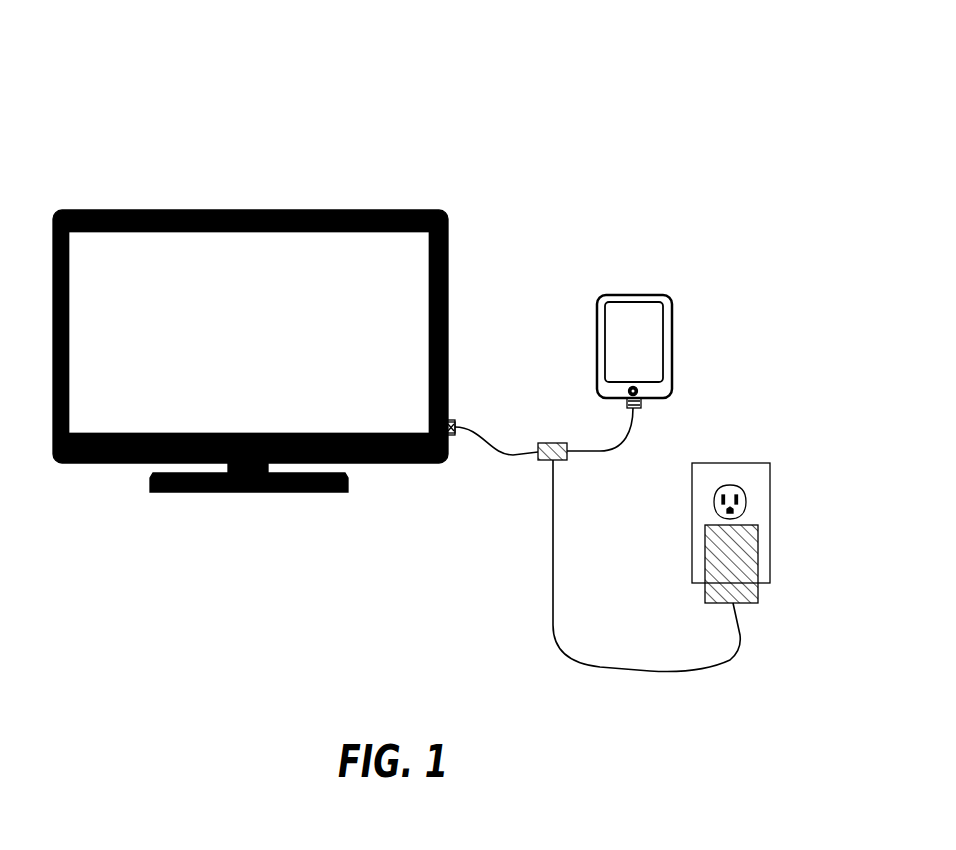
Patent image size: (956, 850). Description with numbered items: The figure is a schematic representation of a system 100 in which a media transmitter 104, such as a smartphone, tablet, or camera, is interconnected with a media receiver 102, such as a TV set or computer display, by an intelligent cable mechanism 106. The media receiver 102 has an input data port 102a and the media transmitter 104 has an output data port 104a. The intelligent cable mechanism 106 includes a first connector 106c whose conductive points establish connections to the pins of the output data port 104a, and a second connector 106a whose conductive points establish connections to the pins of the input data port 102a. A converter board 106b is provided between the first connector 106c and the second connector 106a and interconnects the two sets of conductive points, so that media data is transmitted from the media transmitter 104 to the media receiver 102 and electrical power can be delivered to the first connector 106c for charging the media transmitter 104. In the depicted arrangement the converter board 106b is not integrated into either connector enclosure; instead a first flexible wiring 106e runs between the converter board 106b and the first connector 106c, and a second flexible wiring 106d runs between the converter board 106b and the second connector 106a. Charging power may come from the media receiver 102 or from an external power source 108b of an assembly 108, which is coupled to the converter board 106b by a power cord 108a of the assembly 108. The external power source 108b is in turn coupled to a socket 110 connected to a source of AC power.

The system 100 is at (648, 86).
The media receiver 102 is at (353, 208).
The input data port 102a is at (447, 440).
The media transmitter 104 is at (645, 294).
The output data port 104a is at (668, 399).
The intelligent cable mechanism 106 is at (497, 354).
The second connector 106a is at (459, 440).
The converter board 106b is at (550, 443).
The first connector 106c is at (642, 410).
The second flexible wiring 106d is at (498, 447).
The first flexible wiring 106e is at (615, 462).
The assembly 108 is at (515, 631).
The power cord 108a is at (617, 665).
The external power source 108b is at (745, 606).
The socket 110 is at (762, 487).